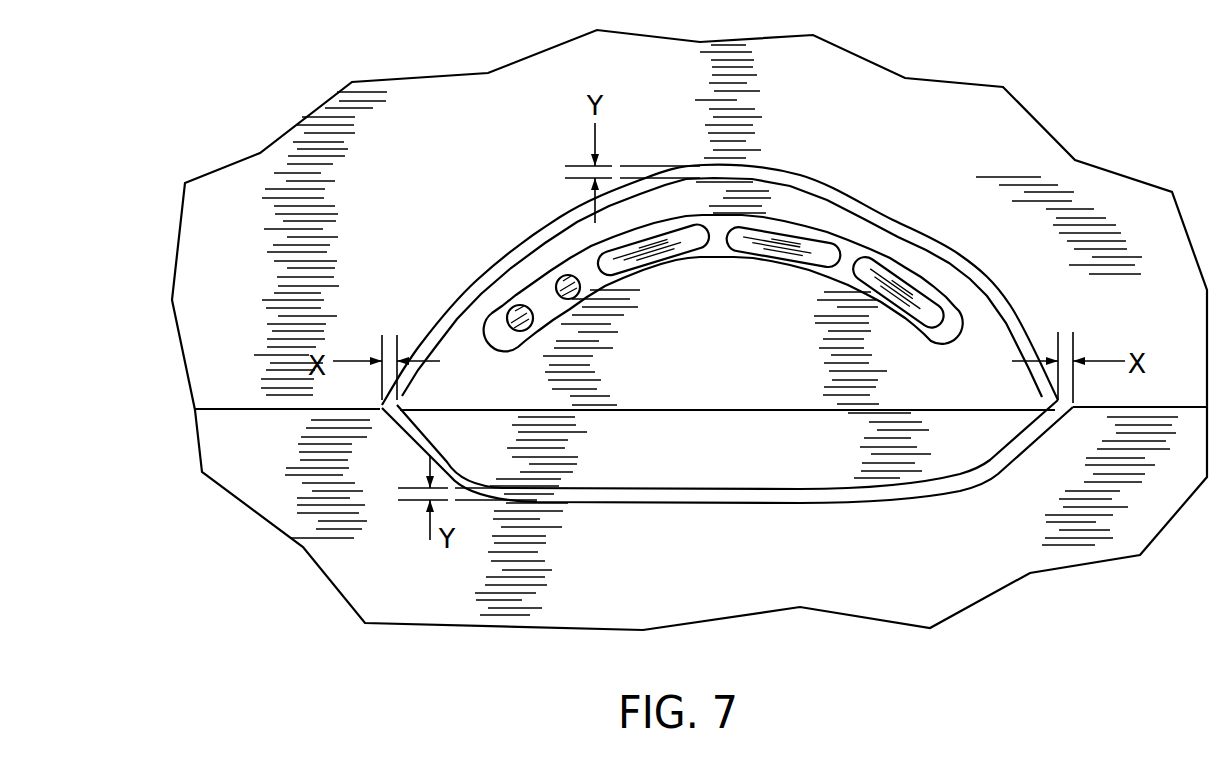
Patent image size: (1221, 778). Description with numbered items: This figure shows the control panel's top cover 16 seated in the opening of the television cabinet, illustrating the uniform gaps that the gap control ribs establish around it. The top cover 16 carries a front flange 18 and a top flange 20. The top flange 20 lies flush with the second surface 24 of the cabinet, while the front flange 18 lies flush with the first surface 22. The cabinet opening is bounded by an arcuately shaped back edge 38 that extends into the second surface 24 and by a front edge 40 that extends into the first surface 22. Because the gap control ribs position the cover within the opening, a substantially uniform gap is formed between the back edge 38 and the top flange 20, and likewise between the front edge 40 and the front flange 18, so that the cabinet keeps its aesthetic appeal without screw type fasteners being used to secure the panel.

The top cover 16 is at (723, 335).
The front flange 18 is at (803, 473).
The top flange 20 is at (882, 245).
The first surface 22 is at (967, 583).
The second surface 24 is at (1043, 165).
The back edge 38 is at (763, 167).
The front edge 40 is at (687, 510).